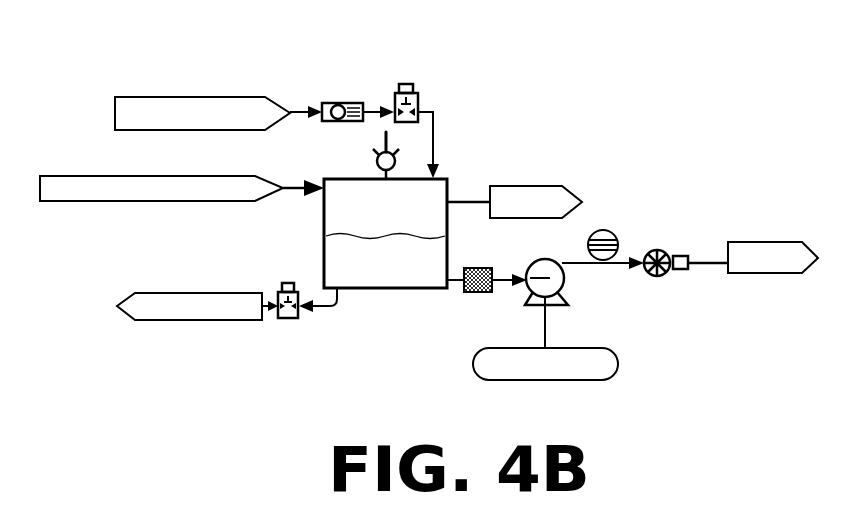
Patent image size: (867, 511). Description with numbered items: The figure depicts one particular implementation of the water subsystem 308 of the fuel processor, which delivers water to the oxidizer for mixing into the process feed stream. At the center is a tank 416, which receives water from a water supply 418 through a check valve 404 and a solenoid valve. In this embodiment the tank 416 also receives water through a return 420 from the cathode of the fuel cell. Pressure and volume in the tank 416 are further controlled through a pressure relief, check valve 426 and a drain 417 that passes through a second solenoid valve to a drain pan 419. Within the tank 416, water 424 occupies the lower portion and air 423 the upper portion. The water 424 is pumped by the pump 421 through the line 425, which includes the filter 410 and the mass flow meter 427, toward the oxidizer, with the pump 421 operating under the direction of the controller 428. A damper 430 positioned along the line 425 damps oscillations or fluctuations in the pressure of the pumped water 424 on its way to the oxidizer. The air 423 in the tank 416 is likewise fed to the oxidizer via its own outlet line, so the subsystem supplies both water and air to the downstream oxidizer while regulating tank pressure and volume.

The water subsystem 308 is at (115, 38).
The water supply 418 is at (190, 91).
The check valve 404 is at (343, 102).
The pressure relief, check valve 426 is at (375, 158).
The return 420 is at (163, 201).
The tank 416 is at (385, 262).
The air 423 is at (385, 208).
The water 424 is at (385, 261).
The mass flow meter 427 is at (470, 200).
The filter 410 is at (463, 292).
The pump 421 is at (537, 261).
The damper 430 is at (613, 230).
The line 425 is at (708, 263).
The controller 428 is at (598, 345).
The drain 417 is at (327, 312).
The drain pan 419 is at (158, 320).